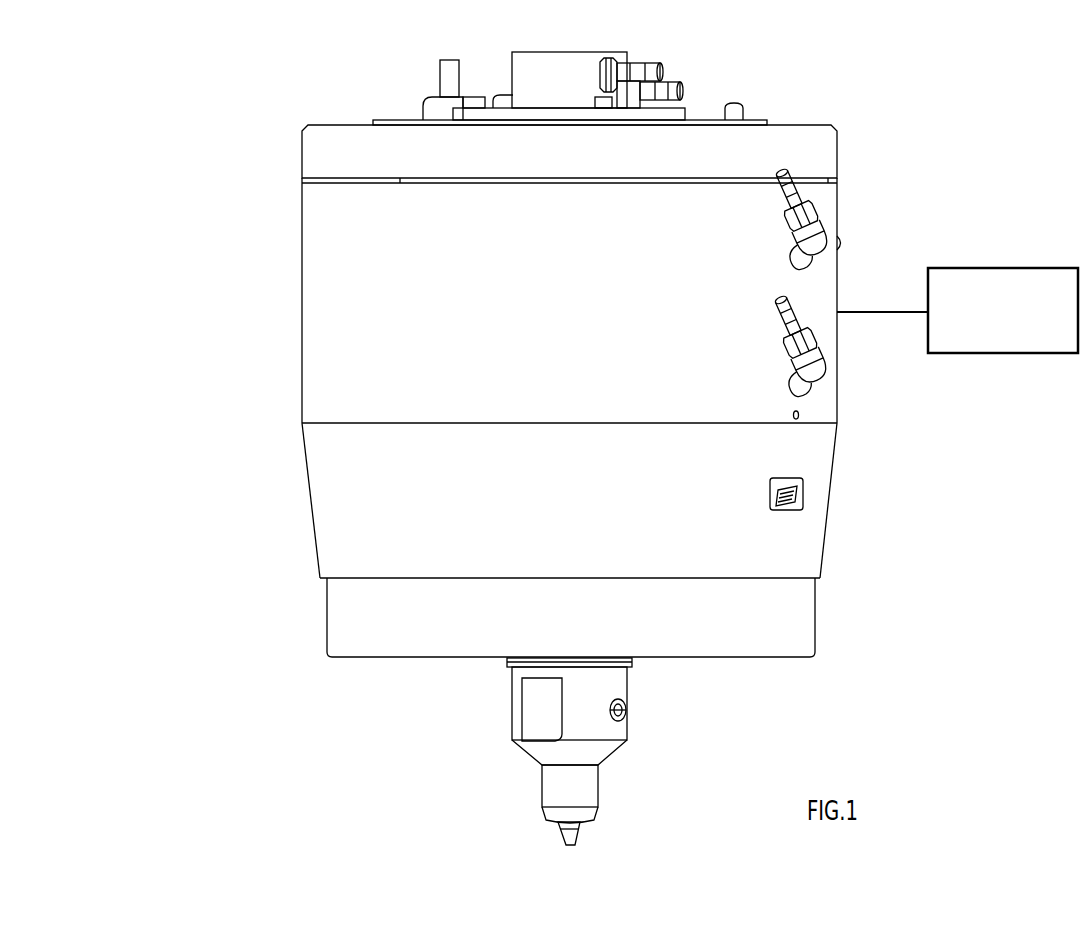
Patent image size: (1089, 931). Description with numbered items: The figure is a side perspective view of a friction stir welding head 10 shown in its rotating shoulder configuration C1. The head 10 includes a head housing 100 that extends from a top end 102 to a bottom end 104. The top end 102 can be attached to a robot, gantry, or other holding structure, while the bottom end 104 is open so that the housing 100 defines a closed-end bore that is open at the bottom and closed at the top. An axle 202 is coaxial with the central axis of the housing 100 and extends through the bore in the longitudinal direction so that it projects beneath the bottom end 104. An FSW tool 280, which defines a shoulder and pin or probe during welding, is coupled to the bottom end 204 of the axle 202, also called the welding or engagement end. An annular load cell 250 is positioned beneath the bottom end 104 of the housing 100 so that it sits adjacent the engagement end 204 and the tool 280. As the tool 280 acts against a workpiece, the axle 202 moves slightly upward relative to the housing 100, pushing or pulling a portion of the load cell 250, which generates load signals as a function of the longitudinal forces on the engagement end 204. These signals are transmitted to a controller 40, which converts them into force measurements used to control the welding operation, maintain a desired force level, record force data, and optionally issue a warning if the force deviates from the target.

The FSW head 10 is at (216, 311).
The rotating shoulder configuration C1 is at (208, 374).
The controller 40 is at (1037, 268).
The head housing 100 is at (318, 512).
The top end 102 is at (812, 114).
The bottom end 104 is at (826, 571).
The annular load cell 250 is at (335, 627).
The axle 202 is at (514, 725).
The bottom end of the axle 204 is at (603, 748).
The FSW tool 280 is at (547, 797).